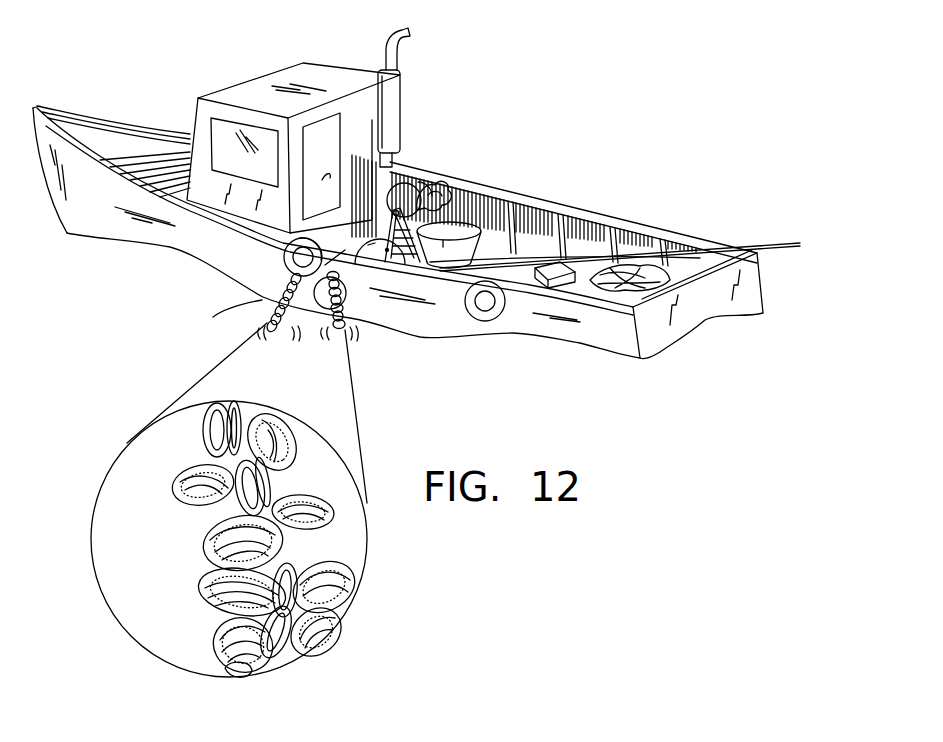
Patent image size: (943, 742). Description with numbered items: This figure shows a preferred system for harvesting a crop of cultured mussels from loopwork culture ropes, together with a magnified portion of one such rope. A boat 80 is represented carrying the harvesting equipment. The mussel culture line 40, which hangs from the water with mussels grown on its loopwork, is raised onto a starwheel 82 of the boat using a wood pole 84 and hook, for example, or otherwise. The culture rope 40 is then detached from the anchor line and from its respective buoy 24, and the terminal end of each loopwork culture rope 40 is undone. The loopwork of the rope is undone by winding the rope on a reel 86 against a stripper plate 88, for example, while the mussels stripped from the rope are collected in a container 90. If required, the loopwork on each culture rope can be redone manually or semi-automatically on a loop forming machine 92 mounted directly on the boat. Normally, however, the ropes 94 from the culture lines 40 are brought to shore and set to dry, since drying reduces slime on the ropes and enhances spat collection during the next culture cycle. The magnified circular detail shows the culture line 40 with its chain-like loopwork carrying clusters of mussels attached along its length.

The boat 80 is at (152, 123).
The starwheel 82 is at (283, 243).
The wood pole 84 is at (640, 250).
The reel 86 is at (413, 170).
The stripper plate 88 is at (440, 200).
The container 90 is at (463, 237).
The loop forming machine 92 is at (573, 267).
The ropes 94 is at (610, 290).
The buoy 24 is at (387, 250).
The mussel culture line 40 is at (262, 300).